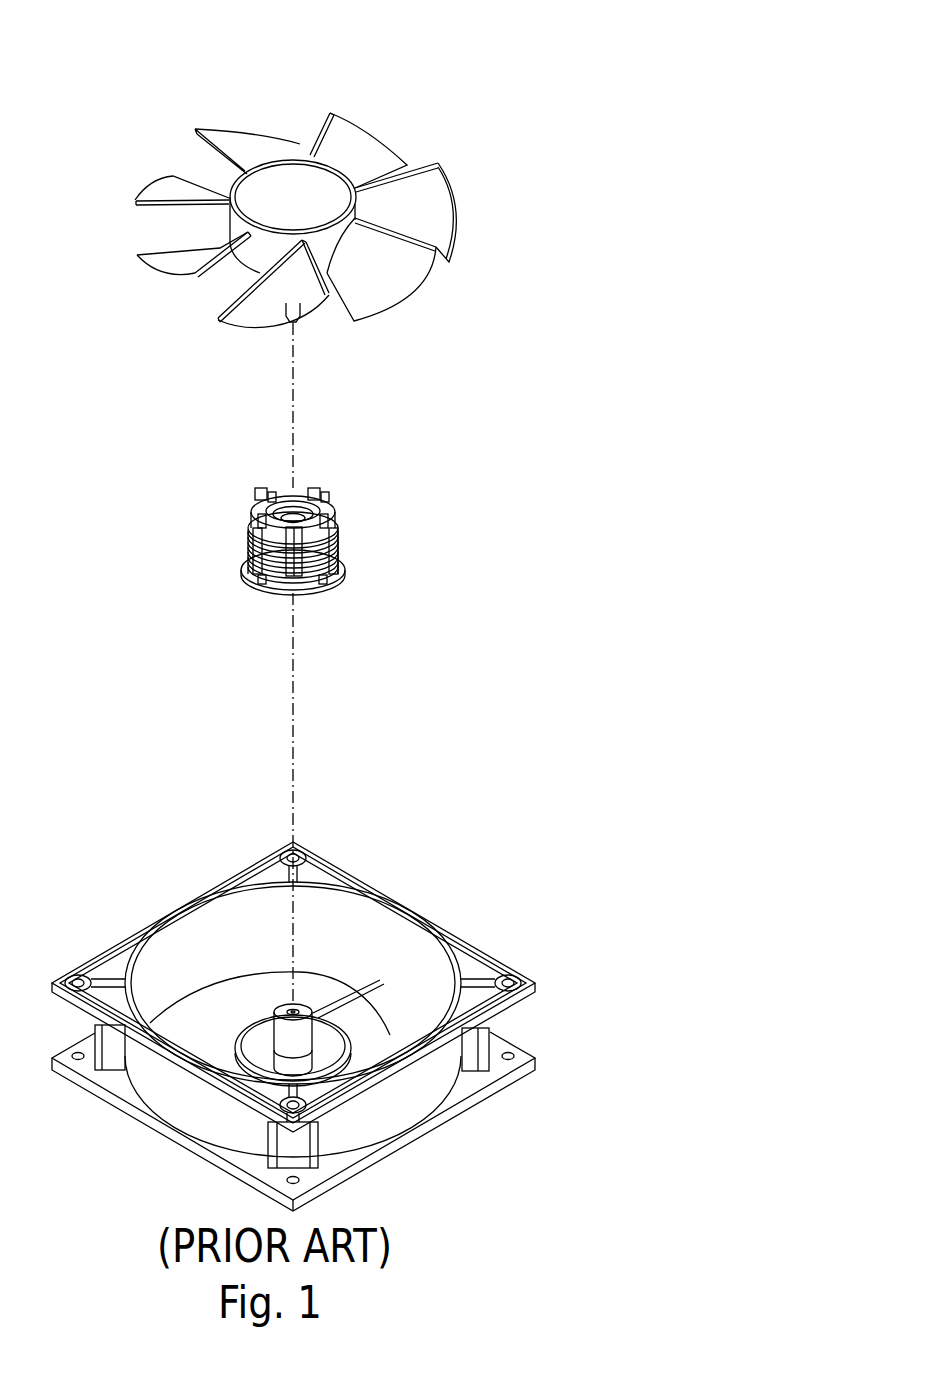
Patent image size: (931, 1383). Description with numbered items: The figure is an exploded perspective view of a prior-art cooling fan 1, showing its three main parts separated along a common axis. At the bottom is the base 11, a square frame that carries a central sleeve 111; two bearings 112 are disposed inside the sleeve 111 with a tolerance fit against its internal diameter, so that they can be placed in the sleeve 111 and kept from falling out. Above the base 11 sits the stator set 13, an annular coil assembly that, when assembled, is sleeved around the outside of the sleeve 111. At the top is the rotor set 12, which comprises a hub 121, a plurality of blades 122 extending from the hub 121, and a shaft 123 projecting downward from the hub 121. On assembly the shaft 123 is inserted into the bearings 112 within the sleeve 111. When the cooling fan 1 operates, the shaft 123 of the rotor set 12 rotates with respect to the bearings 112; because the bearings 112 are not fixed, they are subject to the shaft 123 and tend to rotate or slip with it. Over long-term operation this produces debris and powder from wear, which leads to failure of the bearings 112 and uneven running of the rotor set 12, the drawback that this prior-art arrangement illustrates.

The cooling fan 1 is at (543, 118).
The base 11 is at (350, 1068).
The sleeve 111 is at (302, 1038).
The bearings 112 is at (297, 1012).
The rotor set 12 is at (427, 297).
The hub 121 is at (323, 183).
The blades 122 is at (418, 205).
The shaft 123 is at (287, 320).
The stator set 13 is at (373, 548).